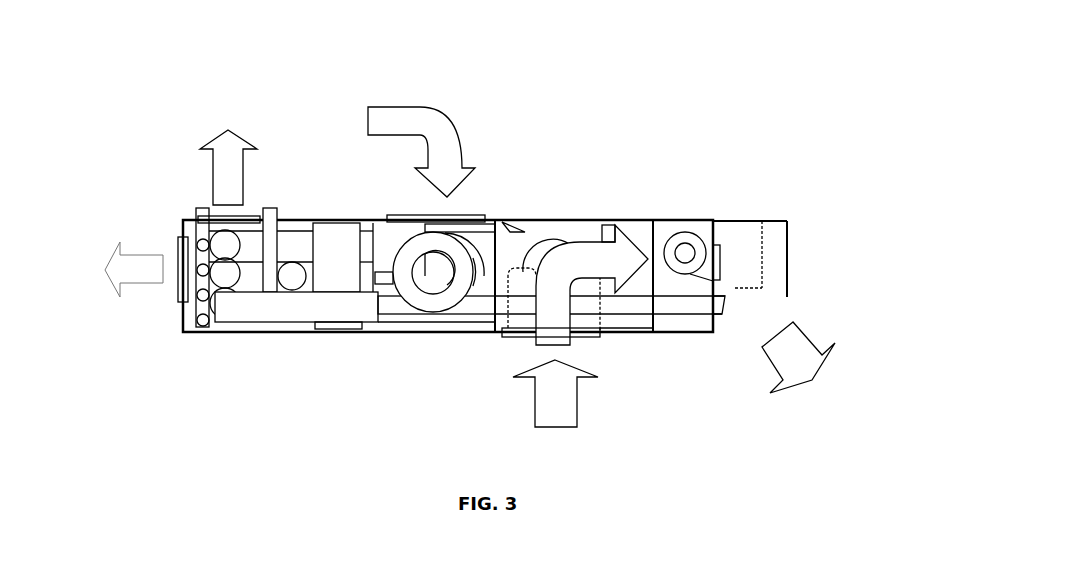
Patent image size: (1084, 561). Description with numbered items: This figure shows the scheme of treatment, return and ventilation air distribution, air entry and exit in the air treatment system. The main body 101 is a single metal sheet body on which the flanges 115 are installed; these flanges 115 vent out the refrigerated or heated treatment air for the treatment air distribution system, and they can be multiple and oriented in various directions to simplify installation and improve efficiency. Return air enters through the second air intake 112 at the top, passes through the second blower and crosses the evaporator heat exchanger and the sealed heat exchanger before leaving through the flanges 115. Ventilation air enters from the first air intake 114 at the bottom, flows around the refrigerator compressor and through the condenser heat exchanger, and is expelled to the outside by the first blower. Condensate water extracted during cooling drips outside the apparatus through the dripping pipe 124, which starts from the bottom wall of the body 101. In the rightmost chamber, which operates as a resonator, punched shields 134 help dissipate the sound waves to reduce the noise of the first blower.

The single metal sheet body 101 is at (558, 220).
The second air intake 112 is at (460, 210).
The first air intake 114 is at (523, 340).
The flanges 115 is at (252, 215).
The dripping pipe 124 is at (328, 340).
The punched shields 134 is at (762, 250).